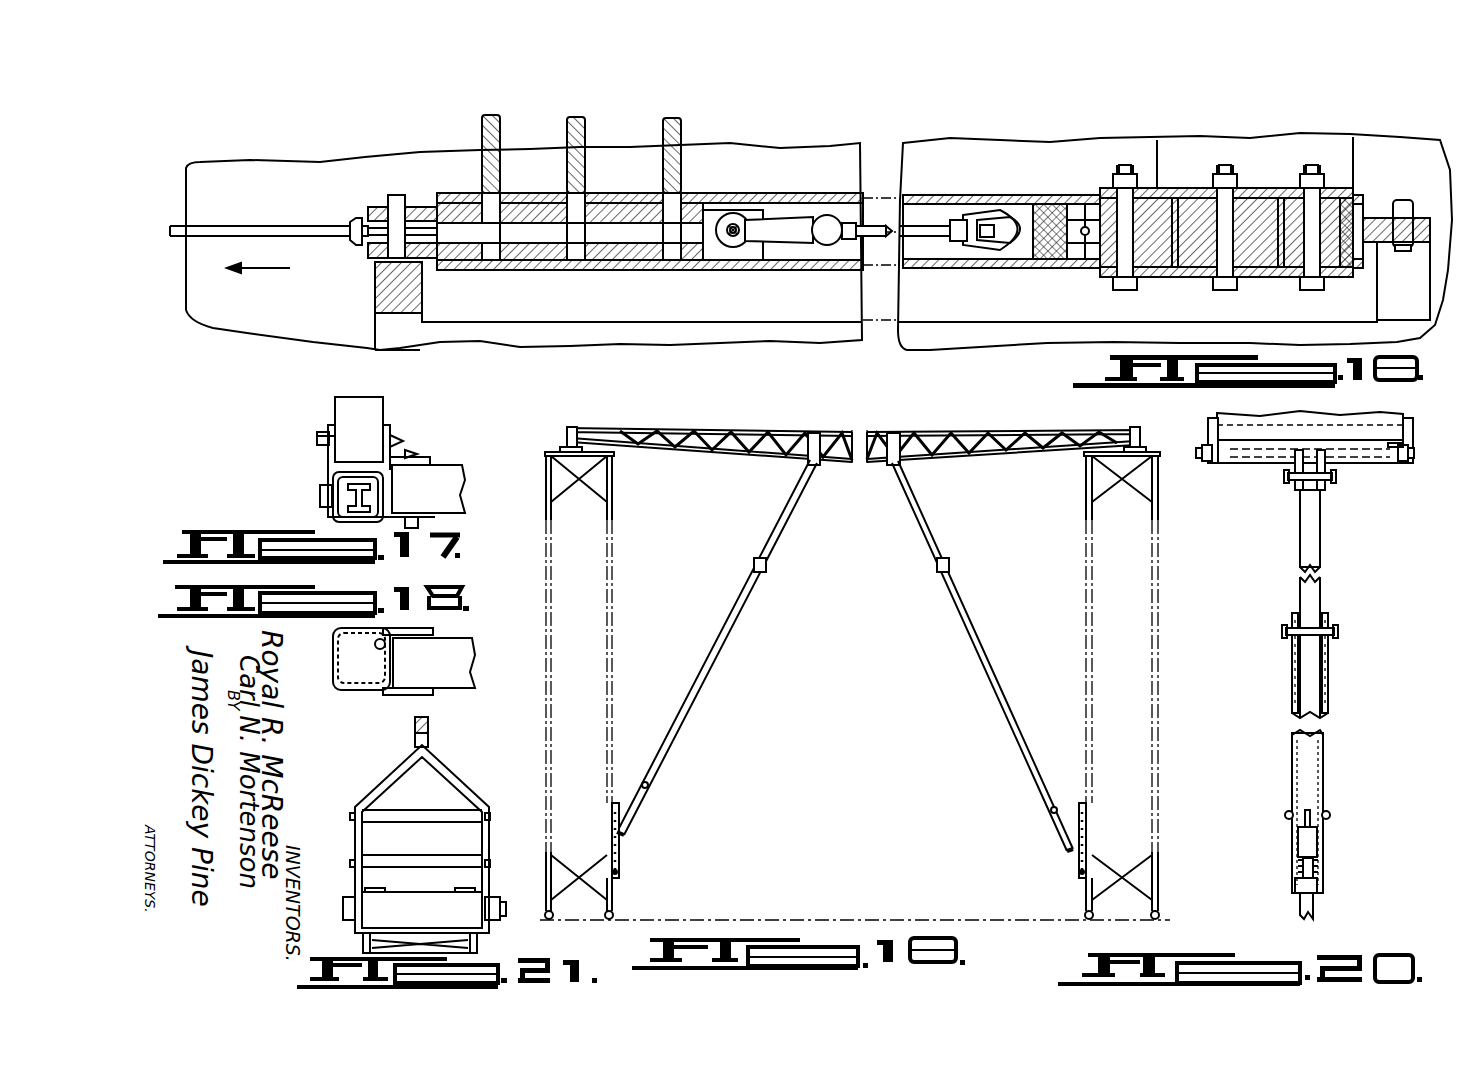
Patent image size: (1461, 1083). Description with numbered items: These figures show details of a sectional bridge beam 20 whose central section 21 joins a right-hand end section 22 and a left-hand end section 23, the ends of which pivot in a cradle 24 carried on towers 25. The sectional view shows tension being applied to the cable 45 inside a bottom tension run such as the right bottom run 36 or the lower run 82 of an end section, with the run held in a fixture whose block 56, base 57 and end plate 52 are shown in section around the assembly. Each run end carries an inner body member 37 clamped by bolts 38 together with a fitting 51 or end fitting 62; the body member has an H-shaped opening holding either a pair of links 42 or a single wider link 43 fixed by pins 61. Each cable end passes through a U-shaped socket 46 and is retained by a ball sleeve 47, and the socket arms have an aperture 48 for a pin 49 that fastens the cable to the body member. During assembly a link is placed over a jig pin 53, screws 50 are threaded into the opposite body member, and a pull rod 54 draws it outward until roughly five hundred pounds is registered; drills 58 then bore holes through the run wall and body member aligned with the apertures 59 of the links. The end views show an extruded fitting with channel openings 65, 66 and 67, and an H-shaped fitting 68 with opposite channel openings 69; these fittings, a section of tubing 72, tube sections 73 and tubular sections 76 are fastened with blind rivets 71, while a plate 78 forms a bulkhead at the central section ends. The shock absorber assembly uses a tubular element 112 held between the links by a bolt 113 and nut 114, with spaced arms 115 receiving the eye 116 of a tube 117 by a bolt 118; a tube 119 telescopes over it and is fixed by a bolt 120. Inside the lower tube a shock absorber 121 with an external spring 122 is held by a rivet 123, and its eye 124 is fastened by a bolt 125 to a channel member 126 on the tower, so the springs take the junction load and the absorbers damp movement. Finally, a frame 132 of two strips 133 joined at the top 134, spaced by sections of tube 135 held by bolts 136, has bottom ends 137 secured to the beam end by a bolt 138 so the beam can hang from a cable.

In FIG. 19, the beam 20 is at (875, 421).
In FIG. 19, the central section 21 is at (848, 462).
In FIG. 19, the right-hand end section 22 is at (1028, 457).
In FIG. 19, the left-hand end section 23 is at (688, 450).
In FIG. 19, the cradle 24 is at (553, 438).
In FIG. 19, the tower 25 is at (613, 500).
In FIG. 16, the right bottom run 36 is at (950, 272).
In FIG. 16, the inner body member 37 is at (625, 270).
In FIG. 17, the inner body member 37 is at (340, 480).
In FIG. 16, the bolts 38 is at (1100, 282).
In FIG. 16, the links 42 is at (415, 247).
In FIG. 20, the links 42 is at (1255, 448).
In FIG. 16, the link 43 is at (1447, 185).
In FIG. 17, the link 43 is at (348, 497).
In FIG. 20, the link 43 is at (1225, 440).
In FIG. 16, the cable 45 is at (925, 227).
In FIG. 16, the U-shaped socket 46 is at (793, 220).
In FIG. 16, the ball sleeve 47 is at (962, 232).
In FIG. 16, the aperture 48 is at (765, 227).
In FIG. 16, the pin 49 is at (737, 242).
In FIG. 16, the screws 50 is at (353, 240).
In FIG. 16, the fitting 51 is at (1295, 153).
In FIG. 20, the fitting 51 is at (1405, 465).
In FIG. 16, the end plate 52 is at (1400, 297).
In FIG. 16, the jig pin 53 is at (388, 203).
In FIG. 16, the pull rod 54 is at (283, 230).
In FIG. 16, the block 56 is at (390, 300).
In FIG. 16, the mount 57 is at (455, 342).
In FIG. 16, the drills 58 is at (482, 128).
In FIG. 16, the apertures 59 is at (498, 210).
In FIG. 16, the pins 61 is at (1125, 290).
In FIG. 17, the end fitting 62 is at (318, 438).
In FIG. 20, the end fitting 62 is at (1205, 455).
In FIG. 17, the channel opening 65 is at (393, 437).
In FIG. 17, the channel opening 66 is at (428, 489).
In FIG. 17, the channel opening 67 is at (430, 457).
In FIG. 18, the fitting 68 is at (385, 693).
In FIG. 18, the channel openings 69 is at (418, 663).
In FIG. 16, the blind rivets 71 is at (402, 232).
In FIG. 17, the blind rivets 71 is at (330, 432).
In FIG. 17, the section of tubing 72 is at (365, 398).
In FIG. 17, the tube sections 73 is at (445, 465).
In FIG. 21, the tube sections 73 is at (465, 903).
In FIG. 18, the tubular sections 76 is at (475, 655).
In FIG. 20, the plate 78 is at (1370, 423).
In FIG. 18, the lower run 82 is at (333, 655).
In FIG. 20, the tubular element 112 is at (1312, 425).
In FIG. 20, the bolt 113 is at (1400, 470).
In FIG. 20, the nut 114 is at (1232, 420).
In FIG. 20, the spaced arms 115 is at (1327, 425).
In FIG. 20, the eye 116 is at (1326, 481).
In FIG. 19, the tube 117 is at (800, 482).
In FIG. 20, the tube 117 is at (1318, 542).
In FIG. 20, the bolt 118 is at (1292, 478).
In FIG. 19, the tube 119 is at (712, 668).
In FIG. 20, the tube 119 is at (1325, 710).
In FIG. 19, the bolt 120 is at (938, 566).
In FIG. 20, the bolt 120 is at (1332, 633).
In FIG. 20, the shock absorber 121 is at (1320, 833).
In FIG. 20, the spring 122 is at (1318, 862).
In FIG. 19, the rivet 123 is at (649, 785).
In FIG. 20, the rivet 123 is at (1330, 812).
In FIG. 19, the eye 124 is at (628, 829).
In FIG. 20, the eye 124 is at (1318, 903).
In FIG. 19, the bolt 125 is at (619, 845).
In FIG. 19, the channel member 126 is at (619, 872).
In FIG. 21, the frame 132 is at (462, 769).
In FIG. 21, the strips 133 is at (492, 816).
In FIG. 21, the top 134 is at (430, 722).
In FIG. 21, the sections of tube 135 is at (408, 862).
In FIG. 21, the bolts 136 is at (489, 813).
In FIG. 21, the bottom ends 137 is at (363, 935).
In FIG. 21, the bolt 138 is at (355, 905).